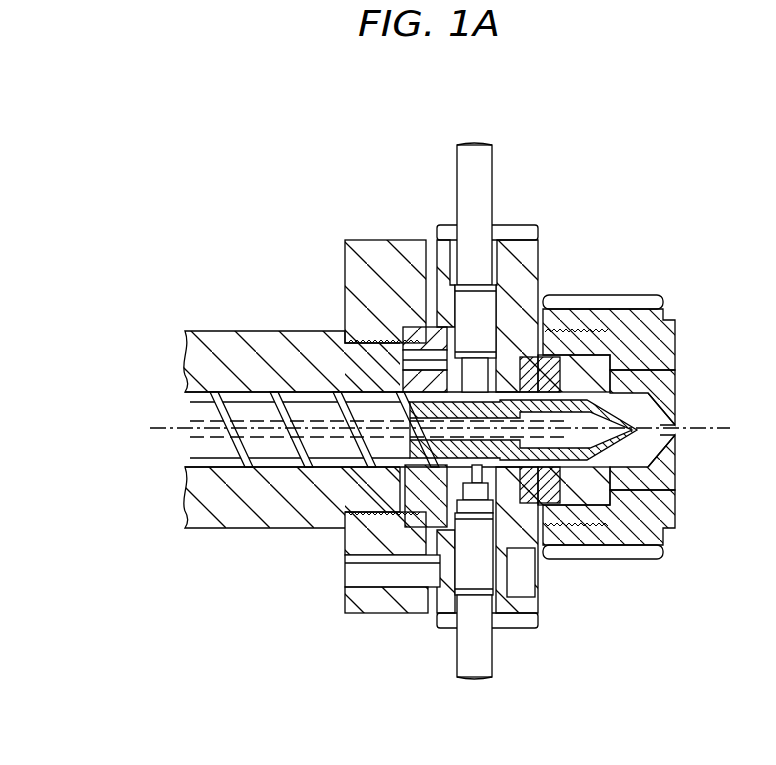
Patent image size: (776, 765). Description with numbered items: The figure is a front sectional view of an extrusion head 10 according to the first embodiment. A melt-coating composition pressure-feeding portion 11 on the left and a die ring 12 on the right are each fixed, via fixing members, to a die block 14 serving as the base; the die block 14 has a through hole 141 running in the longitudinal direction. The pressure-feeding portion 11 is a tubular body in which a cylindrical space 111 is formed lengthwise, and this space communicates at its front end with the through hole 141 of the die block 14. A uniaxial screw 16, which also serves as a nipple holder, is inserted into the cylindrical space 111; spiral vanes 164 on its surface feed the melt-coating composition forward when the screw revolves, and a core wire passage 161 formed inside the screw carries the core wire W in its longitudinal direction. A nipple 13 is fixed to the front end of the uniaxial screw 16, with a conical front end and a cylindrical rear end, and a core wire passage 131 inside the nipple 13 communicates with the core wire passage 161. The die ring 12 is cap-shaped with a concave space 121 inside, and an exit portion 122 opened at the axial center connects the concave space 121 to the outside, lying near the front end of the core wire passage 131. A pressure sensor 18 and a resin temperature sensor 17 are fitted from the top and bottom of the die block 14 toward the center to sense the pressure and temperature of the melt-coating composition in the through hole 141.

The extrusion head 10 is at (642, 163).
The melt-coating composition pressure-feeding portion 11 is at (215, 335).
The cylindrical space 111 is at (257, 392).
The core wire W is at (165, 428).
The die ring 12 is at (673, 378).
The concave space 121 is at (645, 410).
The exit portion 122 is at (676, 446).
The nipple 13 is at (610, 413).
The core wire passage 131 is at (608, 524).
The die block 14 is at (534, 262).
The through hole 141 is at (560, 522).
The uniaxial screw 16 is at (265, 450).
The core wire passage 161 is at (320, 442).
The spiral vanes 164 is at (228, 445).
The resin temperature sensor 17 is at (463, 655).
The pressure sensor 18 is at (463, 183).